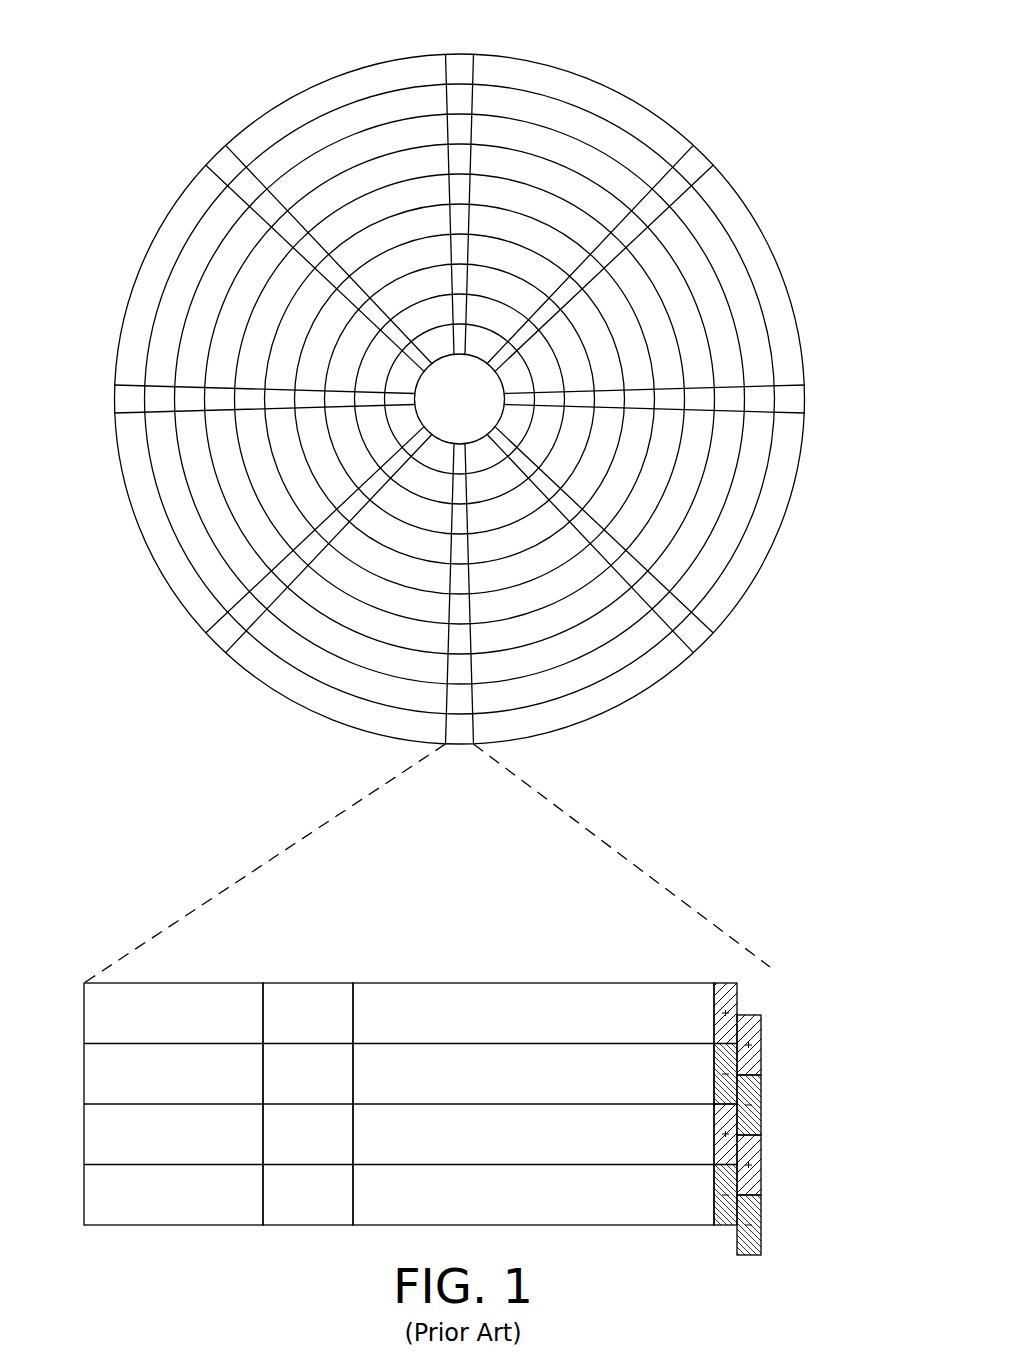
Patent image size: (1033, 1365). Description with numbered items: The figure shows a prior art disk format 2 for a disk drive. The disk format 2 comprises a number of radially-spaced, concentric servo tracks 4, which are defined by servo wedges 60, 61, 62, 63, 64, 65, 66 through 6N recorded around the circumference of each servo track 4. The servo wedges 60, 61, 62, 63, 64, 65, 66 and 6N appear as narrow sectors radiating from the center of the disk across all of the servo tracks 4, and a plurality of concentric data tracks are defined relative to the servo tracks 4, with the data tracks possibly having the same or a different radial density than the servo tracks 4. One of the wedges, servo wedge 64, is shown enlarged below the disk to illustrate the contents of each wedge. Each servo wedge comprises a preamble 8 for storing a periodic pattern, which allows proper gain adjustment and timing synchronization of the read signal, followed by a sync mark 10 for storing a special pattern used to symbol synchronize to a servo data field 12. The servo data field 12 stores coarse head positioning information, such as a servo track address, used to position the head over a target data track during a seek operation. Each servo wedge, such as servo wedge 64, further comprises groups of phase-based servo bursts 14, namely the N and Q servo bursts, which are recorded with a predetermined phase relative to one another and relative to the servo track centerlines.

The disk format 2 is at (207, 60).
The servo tracks 4 is at (600, 105).
The servo wedge 60 is at (457, 66).
The servo wedge 61 is at (695, 163).
The servo wedge 62 is at (797, 402).
The servo wedge 63 is at (693, 637).
The servo wedge 64 is at (306, 826).
The servo wedge 65 is at (221, 637).
The servo wedge 66 is at (121, 400).
The servo wedge 6N is at (222, 165).
The preamble 8 is at (183, 983).
The sync mark 10 is at (312, 983).
The servo data field 12 is at (518, 983).
The servo bursts 14 is at (754, 982).